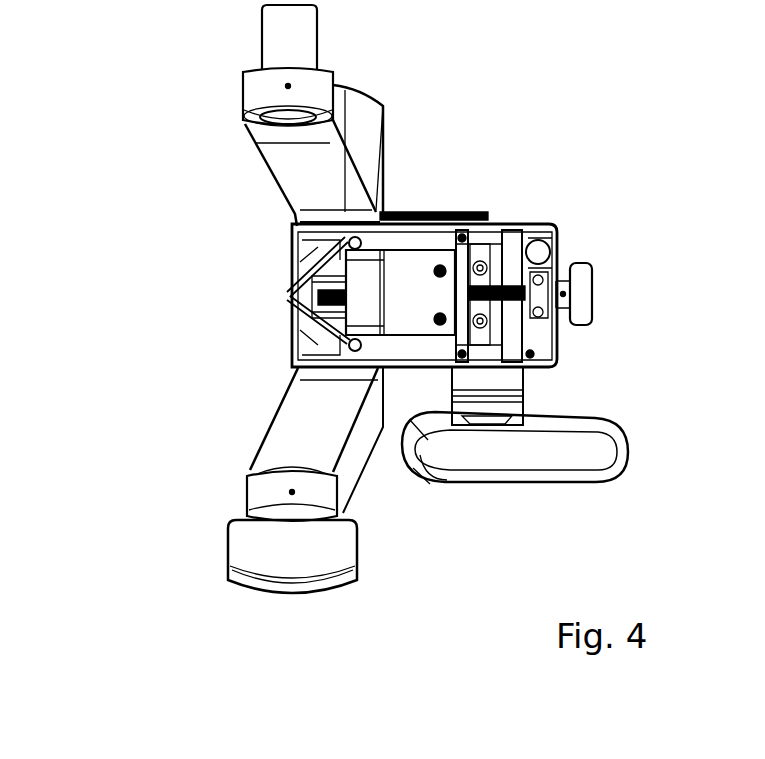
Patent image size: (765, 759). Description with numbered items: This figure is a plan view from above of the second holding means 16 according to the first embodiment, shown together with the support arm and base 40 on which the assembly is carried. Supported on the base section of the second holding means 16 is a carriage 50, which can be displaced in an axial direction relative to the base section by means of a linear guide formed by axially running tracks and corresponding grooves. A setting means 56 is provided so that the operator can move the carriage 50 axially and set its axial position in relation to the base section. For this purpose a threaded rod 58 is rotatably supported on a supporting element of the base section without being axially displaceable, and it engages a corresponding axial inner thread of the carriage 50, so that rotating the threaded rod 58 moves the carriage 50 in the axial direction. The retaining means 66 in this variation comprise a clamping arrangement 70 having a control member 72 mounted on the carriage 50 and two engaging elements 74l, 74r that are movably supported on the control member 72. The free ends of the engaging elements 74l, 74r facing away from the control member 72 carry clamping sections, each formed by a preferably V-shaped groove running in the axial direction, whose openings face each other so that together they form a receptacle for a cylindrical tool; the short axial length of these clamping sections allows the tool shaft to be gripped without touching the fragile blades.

The second holding means 16 is at (122, 112).
The support arm with base 40 is at (222, 503).
The carriage 50 is at (460, 214).
The setting means 56 is at (582, 265).
The threaded rod 58 is at (512, 226).
The retaining means 66 is at (290, 298).
The clamping arrangement 70 is at (398, 212).
The control member 72 is at (412, 245).
The right engaging element 74r is at (300, 238).
The left engaging element 74l is at (296, 332).